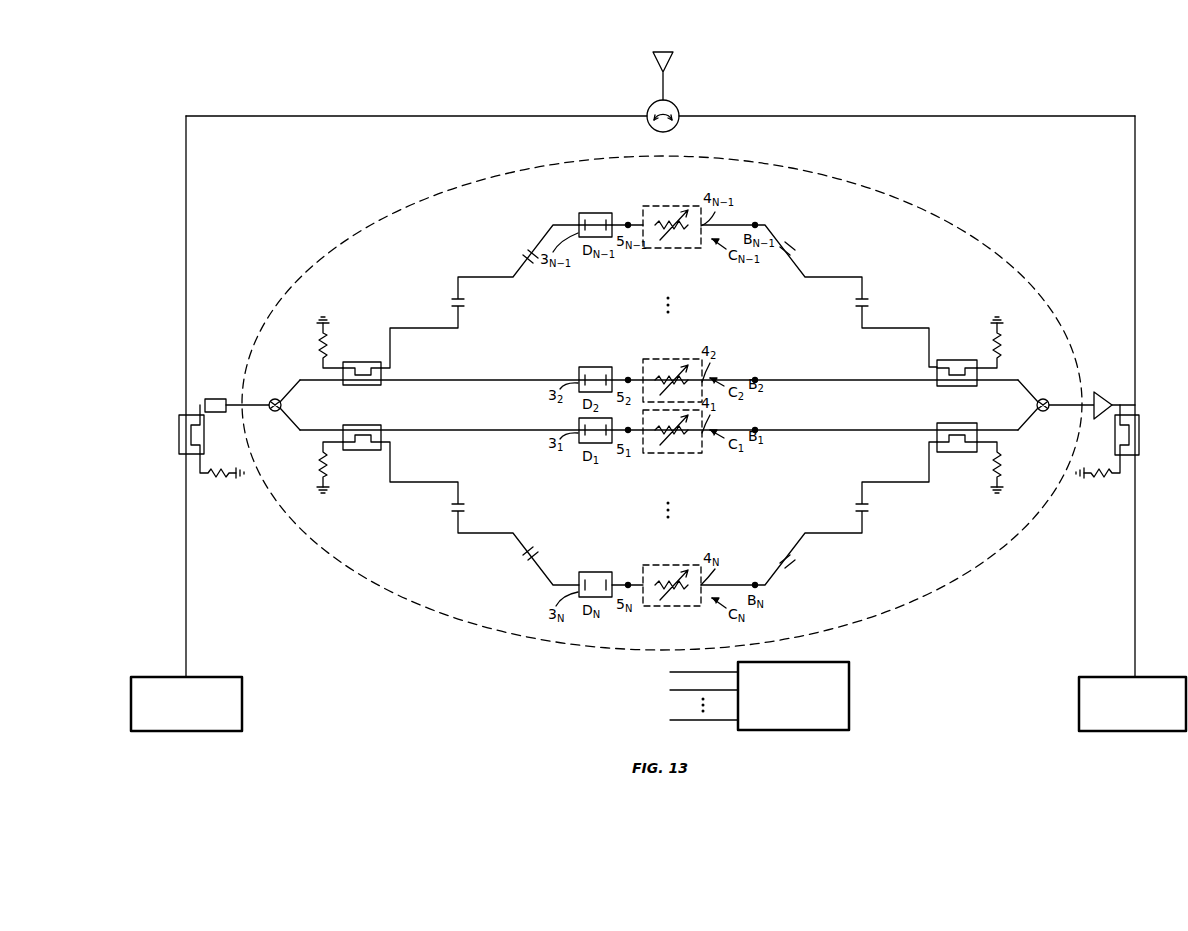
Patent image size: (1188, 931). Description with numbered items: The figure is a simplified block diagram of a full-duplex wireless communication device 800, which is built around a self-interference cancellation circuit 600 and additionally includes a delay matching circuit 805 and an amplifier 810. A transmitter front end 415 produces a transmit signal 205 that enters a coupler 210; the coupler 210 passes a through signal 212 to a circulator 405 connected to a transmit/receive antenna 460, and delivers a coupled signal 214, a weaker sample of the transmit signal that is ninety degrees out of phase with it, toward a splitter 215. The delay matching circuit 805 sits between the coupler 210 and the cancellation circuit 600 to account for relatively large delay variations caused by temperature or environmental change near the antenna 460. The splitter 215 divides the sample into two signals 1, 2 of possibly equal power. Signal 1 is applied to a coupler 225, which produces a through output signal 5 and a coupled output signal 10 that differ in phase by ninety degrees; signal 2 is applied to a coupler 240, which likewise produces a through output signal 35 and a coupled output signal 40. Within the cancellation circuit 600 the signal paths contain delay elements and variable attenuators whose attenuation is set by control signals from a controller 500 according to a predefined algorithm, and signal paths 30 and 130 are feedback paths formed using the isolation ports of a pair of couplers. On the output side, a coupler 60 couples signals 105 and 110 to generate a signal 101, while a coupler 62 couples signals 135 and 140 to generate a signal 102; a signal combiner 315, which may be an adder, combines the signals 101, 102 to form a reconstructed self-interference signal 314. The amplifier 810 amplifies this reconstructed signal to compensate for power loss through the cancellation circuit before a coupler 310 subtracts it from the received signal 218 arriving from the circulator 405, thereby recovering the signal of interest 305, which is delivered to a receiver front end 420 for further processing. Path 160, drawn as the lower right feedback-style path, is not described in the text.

The full-duplex wireless communication device 800 is at (181, 62).
The through signal 212 is at (270, 115).
The received signal 218 is at (1048, 115).
The transmit signal 205 is at (185, 560).
The signal of interest 305 is at (1136, 560).
The transmit/receive antenna 460 is at (651, 60).
The circulator 405 is at (676, 105).
The self-interference cancellation circuit 600 is at (868, 190).
The coupler 210 is at (179, 432).
The delay matching circuit 805 is at (204, 402).
The coupled signal 214 is at (237, 400).
The splitter 215 is at (272, 400).
The signal 1 is at (312, 382).
The signal 2 is at (312, 428).
The coupler 225 is at (362, 361).
The coupler 240 is at (362, 451).
The through output signal 5 is at (395, 382).
The through output signal 35 is at (395, 428).
The coupled output signal 10 is at (392, 343).
The coupled output signal 40 is at (392, 470).
The signal path 30 is at (540, 238).
The coupler 60 is at (957, 359).
The coupler 62 is at (957, 453).
The signal path 130 is at (786, 245).
The lower right path 160 is at (786, 571).
The signal 110 is at (927, 345).
The signal 105 is at (928, 381).
The signal 135 is at (928, 429).
The signal 140 is at (927, 470).
The signal 101 is at (1012, 381).
The signal 102 is at (1012, 428).
The signal combiner 315 is at (1045, 399).
The reconstructed self-interference signal 314 is at (1094, 398).
The amplifier 810 is at (1116, 392).
The coupler 310 is at (1140, 430).
The transmitter front end 415 is at (242, 700).
The receiver front end 420 is at (1079, 700).
The controller 500 is at (849, 700).